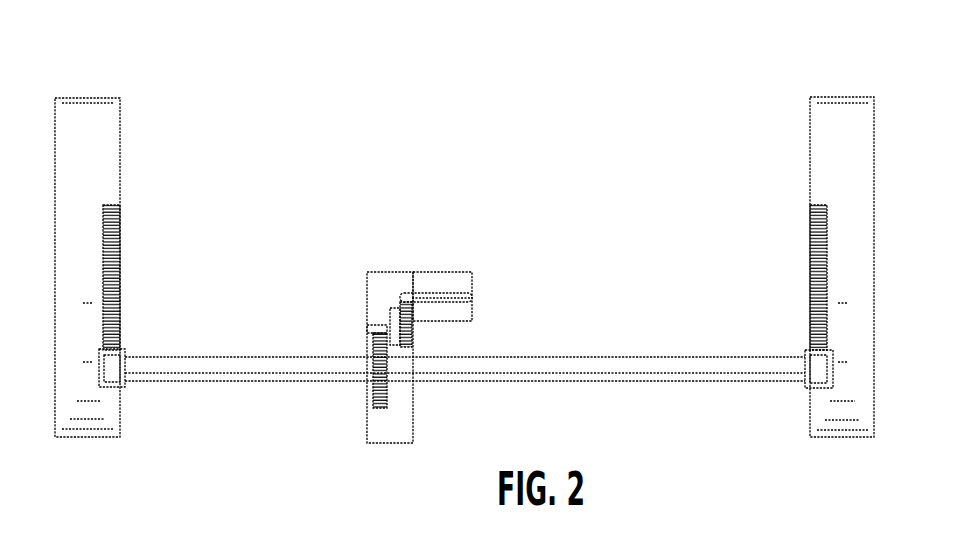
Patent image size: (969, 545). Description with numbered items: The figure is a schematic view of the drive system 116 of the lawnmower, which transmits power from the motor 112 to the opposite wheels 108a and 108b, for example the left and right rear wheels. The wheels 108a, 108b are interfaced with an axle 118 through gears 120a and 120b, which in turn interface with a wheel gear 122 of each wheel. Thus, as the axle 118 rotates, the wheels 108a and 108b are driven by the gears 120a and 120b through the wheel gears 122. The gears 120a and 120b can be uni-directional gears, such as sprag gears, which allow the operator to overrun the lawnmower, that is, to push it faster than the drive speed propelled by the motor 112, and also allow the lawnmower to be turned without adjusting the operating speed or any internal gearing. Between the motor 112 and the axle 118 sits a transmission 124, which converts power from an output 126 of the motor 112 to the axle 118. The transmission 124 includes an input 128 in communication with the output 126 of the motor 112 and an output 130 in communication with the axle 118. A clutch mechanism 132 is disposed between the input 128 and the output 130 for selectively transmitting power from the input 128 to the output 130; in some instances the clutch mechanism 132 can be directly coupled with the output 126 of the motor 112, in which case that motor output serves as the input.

The wheel 108a is at (90, 112).
The wheel 108b is at (842, 112).
The motor 112 is at (474, 282).
The drive system 116 is at (557, 122).
The axle 118 is at (628, 363).
The gear 120a is at (110, 388).
The gear 120b is at (805, 384).
The wheel gear 122 is at (122, 257).
The transmission 124 is at (365, 418).
The output 126 is at (402, 293).
The input 128 is at (415, 348).
The output 130 is at (382, 410).
The clutch mechanism 132 is at (396, 306).